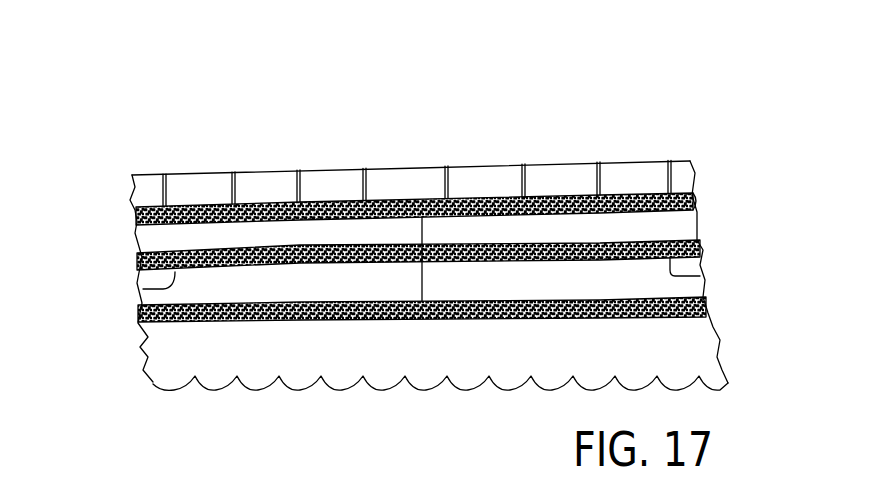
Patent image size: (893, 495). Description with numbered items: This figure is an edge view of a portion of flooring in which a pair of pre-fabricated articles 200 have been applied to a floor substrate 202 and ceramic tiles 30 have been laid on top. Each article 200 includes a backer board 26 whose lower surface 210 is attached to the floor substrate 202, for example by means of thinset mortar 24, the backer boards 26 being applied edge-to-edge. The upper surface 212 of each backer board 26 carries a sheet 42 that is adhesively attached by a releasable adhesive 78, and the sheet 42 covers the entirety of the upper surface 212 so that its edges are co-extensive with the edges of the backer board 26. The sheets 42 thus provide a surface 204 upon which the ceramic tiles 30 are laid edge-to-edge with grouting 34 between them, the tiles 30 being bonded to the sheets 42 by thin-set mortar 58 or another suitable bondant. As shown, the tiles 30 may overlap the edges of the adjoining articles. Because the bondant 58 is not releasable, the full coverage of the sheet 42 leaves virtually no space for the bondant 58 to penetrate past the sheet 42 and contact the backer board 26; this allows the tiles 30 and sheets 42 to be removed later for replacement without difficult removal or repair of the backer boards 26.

The pre-fabricated article 200 is at (130, 265).
The ceramic tiles 30 is at (187, 180).
The grouting 34 is at (232, 172).
The surface 204 is at (465, 200).
The thin-set mortar 58 is at (693, 203).
The sheet 42 is at (312, 247).
The backer board 26 is at (313, 300).
The upper surface 212 is at (383, 257).
The releasable adhesive 78 is at (143, 289).
The thinset mortar 24 is at (707, 303).
The lower surface 210 is at (205, 323).
The floor substrate 202 is at (473, 369).